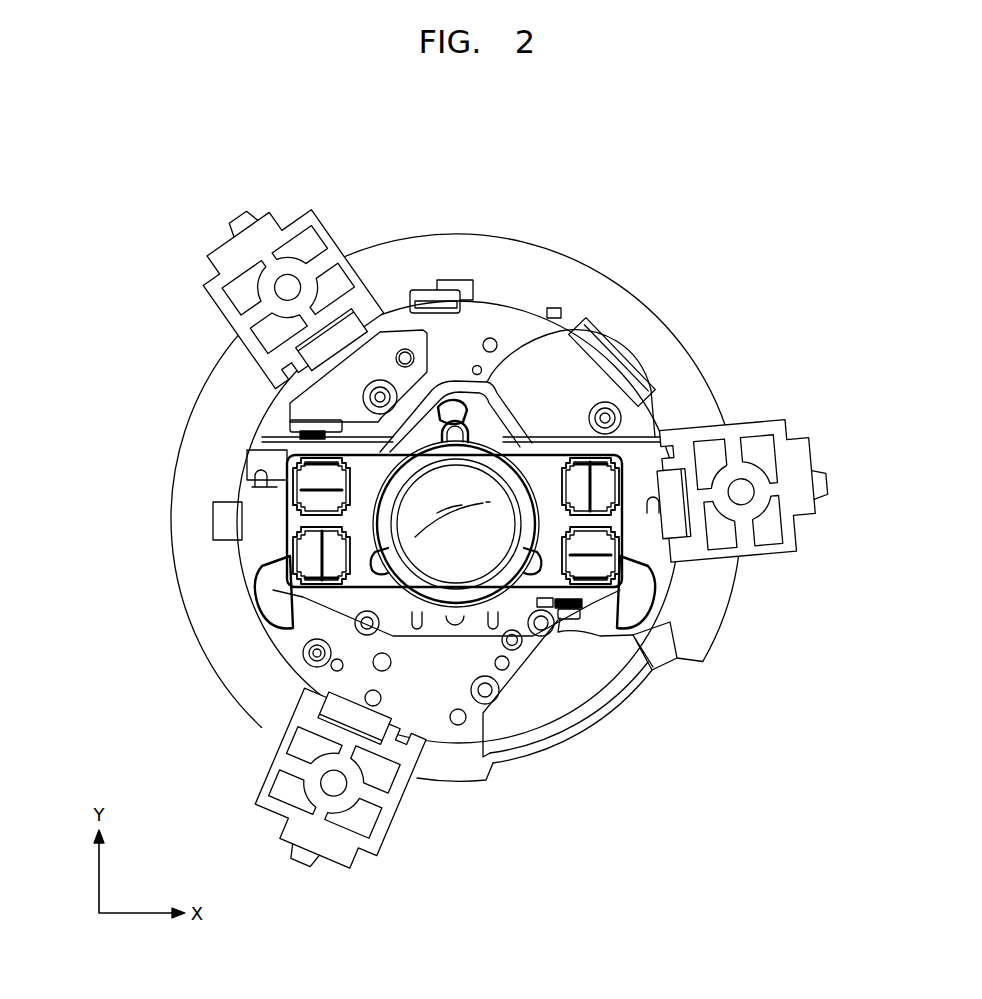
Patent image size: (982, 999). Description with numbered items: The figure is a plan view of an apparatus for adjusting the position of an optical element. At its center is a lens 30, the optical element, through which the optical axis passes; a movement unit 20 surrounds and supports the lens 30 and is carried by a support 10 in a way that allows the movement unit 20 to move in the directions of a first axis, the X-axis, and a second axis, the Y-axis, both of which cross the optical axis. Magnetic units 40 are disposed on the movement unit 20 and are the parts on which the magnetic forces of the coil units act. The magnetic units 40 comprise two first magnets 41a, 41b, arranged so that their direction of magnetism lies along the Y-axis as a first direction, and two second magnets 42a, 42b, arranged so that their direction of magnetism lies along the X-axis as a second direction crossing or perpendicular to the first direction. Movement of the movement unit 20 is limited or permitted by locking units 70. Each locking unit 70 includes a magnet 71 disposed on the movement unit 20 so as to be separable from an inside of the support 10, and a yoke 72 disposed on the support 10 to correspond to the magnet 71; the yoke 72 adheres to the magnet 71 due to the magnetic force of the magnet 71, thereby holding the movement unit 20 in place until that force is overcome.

The support 10 is at (528, 332).
The movement unit 20 is at (543, 467).
The lens 30 is at (472, 482).
The magnetic units 40 is at (428, 587).
The first magnet 41a is at (300, 497).
The first magnet 41b is at (603, 570).
The second magnet 42a is at (605, 497).
The second magnet 42b is at (313, 567).
The locking unit 70 is at (349, 581).
The magnet 71 is at (303, 440).
The yoke 72 is at (300, 432).